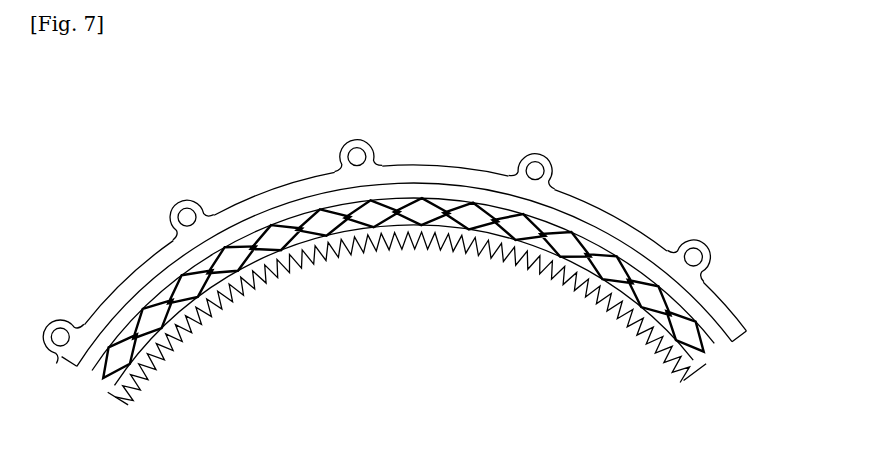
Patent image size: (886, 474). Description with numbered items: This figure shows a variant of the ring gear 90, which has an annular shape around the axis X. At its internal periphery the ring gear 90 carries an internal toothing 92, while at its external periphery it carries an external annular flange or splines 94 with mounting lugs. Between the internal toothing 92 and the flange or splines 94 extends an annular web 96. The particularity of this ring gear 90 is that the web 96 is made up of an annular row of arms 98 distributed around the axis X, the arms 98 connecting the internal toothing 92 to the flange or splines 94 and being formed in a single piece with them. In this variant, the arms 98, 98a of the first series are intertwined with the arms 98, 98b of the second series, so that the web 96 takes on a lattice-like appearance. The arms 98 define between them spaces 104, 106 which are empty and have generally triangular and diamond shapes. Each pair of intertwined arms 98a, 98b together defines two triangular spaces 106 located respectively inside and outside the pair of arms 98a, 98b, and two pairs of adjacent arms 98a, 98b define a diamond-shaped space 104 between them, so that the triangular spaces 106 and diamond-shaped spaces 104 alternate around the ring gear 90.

The ring gear 90 is at (750, 216).
The internal toothing 92 is at (176, 361).
The external annular flange or splines 94 is at (172, 207).
The annular web 96 is at (524, 221).
The arms 98 is at (403, 233).
The arms of the first series 98a is at (407, 318).
The arms of the second series 98b is at (403, 223).
The diamond-shaped space 104 is at (403, 236).
The triangular spaces 106 is at (338, 207).